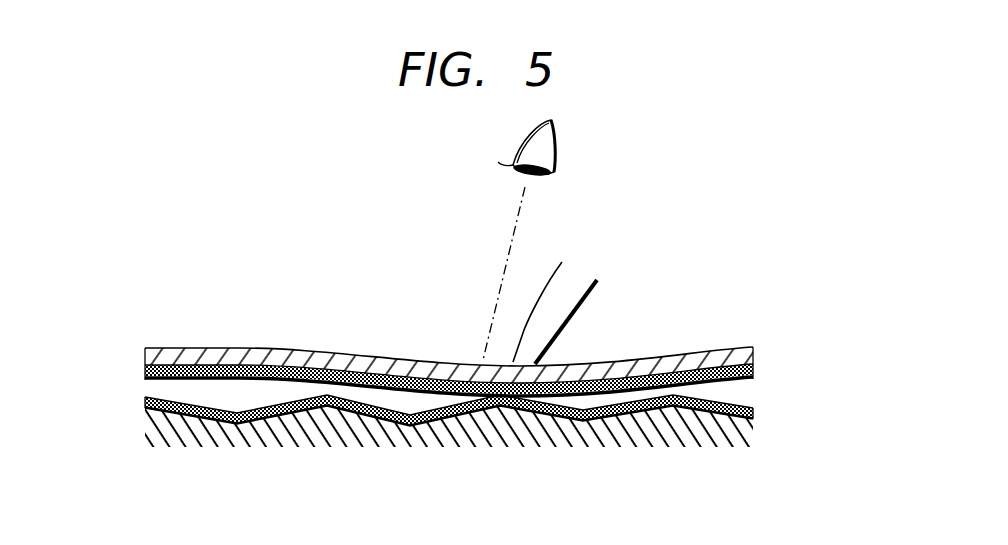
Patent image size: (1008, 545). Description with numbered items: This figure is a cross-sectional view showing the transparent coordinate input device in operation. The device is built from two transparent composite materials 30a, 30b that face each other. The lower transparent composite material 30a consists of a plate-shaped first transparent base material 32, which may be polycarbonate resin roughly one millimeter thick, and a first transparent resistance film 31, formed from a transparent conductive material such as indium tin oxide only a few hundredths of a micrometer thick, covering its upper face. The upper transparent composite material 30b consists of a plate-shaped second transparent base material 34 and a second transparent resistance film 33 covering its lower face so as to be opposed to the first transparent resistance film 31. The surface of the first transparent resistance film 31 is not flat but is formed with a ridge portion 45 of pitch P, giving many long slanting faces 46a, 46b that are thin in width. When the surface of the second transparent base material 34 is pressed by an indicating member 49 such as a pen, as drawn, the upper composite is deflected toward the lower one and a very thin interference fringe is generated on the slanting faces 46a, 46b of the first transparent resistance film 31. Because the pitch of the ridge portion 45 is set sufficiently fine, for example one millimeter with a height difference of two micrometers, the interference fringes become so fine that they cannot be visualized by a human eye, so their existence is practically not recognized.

The transparent composite material 30a is at (470, 451).
The transparent composite material 30b is at (467, 359).
The first transparent resistance film 31 is at (145, 403).
The first transparent base material 32 is at (177, 437).
The second transparent resistance film 33 is at (145, 371).
The second transparent base material 34 is at (145, 351).
The ridge portion 45 is at (350, 400).
The slanting face 46a is at (195, 405).
The slanting face 46b is at (280, 407).
The indicating member 49 is at (557, 327).